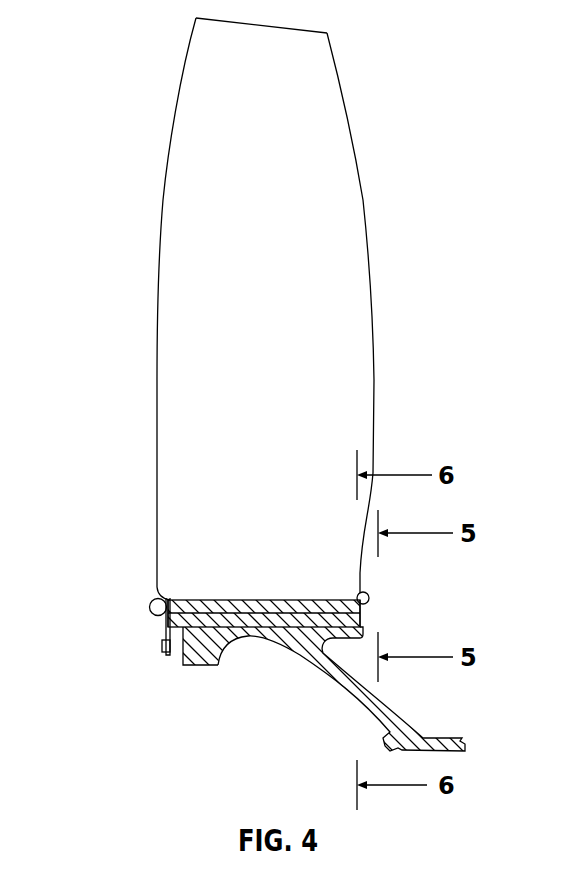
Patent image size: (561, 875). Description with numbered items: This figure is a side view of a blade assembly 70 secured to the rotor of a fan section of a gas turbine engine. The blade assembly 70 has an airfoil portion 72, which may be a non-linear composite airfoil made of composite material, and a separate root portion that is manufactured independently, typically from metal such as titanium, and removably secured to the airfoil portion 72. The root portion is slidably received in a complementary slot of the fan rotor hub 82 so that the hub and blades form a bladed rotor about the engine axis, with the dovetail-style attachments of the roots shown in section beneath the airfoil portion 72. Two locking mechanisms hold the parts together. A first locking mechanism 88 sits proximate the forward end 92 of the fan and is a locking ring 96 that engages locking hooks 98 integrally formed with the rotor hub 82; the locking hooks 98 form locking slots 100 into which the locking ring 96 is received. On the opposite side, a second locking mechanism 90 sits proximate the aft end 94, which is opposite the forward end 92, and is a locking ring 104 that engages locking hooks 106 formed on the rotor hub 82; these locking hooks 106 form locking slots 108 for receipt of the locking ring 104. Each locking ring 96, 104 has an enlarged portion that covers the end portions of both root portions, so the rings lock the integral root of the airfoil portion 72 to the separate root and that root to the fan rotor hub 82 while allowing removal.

The blade assembly 70 is at (110, 60).
The airfoil portion 72 is at (345, 213).
The fan rotor hub 82 is at (203, 653).
The first locking mechanism 88 is at (435, 619).
The second locking mechanism 90 is at (113, 622).
The forward end 92 is at (365, 627).
The aft end 94 is at (163, 645).
The locking ring 96 is at (368, 614).
The locking hooks 98 is at (372, 594).
The locking slots 100 is at (358, 593).
The locking ring 104 is at (167, 625).
The locking hooks 106 is at (150, 605).
The locking slots 108 is at (163, 601).